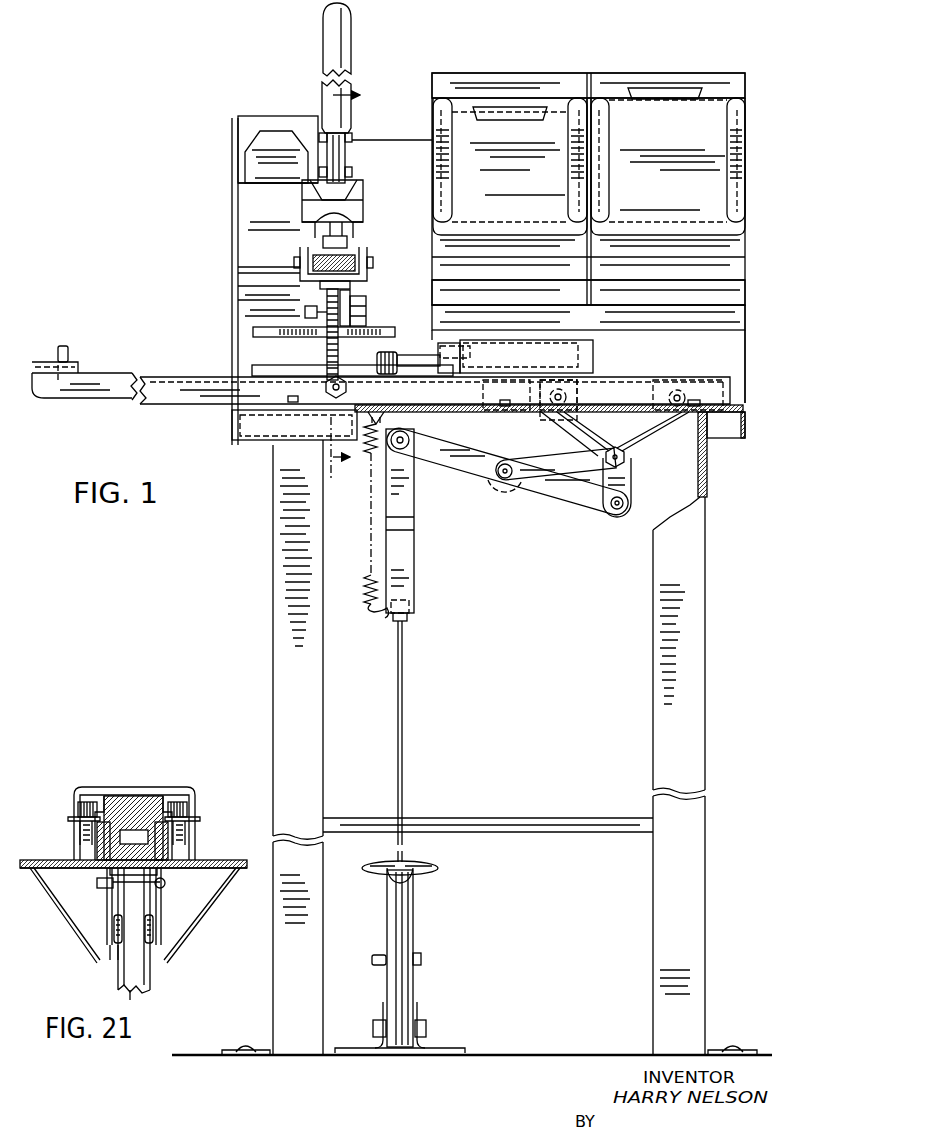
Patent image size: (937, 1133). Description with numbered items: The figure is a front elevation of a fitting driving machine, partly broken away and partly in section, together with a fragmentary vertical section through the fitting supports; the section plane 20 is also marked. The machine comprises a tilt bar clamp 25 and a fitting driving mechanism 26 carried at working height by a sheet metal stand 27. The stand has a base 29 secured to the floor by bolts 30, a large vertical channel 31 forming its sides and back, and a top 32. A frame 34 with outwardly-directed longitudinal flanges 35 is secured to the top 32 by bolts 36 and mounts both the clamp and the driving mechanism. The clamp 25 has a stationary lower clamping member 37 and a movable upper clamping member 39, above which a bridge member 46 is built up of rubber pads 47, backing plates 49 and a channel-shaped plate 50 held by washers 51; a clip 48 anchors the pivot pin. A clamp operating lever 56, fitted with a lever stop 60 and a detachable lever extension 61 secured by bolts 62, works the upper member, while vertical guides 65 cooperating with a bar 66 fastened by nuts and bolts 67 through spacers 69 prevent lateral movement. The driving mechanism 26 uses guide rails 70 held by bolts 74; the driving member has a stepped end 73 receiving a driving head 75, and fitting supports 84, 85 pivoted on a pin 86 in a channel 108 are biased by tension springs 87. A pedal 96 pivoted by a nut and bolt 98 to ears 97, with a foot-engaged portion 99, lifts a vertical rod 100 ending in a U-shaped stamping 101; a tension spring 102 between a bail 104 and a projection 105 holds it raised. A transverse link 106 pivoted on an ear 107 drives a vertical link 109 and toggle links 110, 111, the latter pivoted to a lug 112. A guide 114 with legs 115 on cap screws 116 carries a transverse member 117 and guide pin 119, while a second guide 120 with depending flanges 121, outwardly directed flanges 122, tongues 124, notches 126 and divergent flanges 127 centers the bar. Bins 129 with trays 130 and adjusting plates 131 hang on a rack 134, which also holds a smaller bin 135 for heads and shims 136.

In FIG. 1, the section line 20- 20 is at (368, 290).
In FIG. 1, the tilt bar clamp 25 is at (375, 212).
In FIG. 1, the fitting driving mechanism 26 is at (574, 340).
In FIG. 1, the stand 27 is at (712, 714).
In FIG. 1, the base 29 is at (262, 1056).
In FIG. 1, the bolts 30 is at (252, 1048).
In FIG. 1, the vertical channel 31 is at (273, 745).
In FIG. 1, the top 32 is at (255, 440).
In FIG. 1, the frame 34 is at (598, 378).
In FIG. 21, the frame 34 is at (133, 874).
In FIG. 1, the longitudinal flanges 35 is at (452, 412).
In FIG. 1, the bolts 36 is at (292, 402).
In FIG. 1, the lower clamping member 37 is at (290, 372).
In FIG. 1, the upper clamping member 39 is at (280, 338).
In FIG. 1, the bridge member 46 is at (268, 247).
In FIG. 1, the rubber pads 47 is at (356, 262).
In FIG. 1, the clip 48 is at (300, 272).
In FIG. 1, the backing plates 49 is at (348, 243).
In FIG. 1, the channel-shaped plate 50 is at (326, 298).
In FIG. 1, the washers 51 is at (350, 287).
In FIG. 1, the clamp operating lever 56 is at (365, 230).
In FIG. 1, the lever stop 60 is at (302, 205).
In FIG. 1, the lever extension 61 is at (350, 50).
In FIG. 1, the bolts 62 is at (350, 140).
In FIG. 1, the vertical guides 65 is at (435, 345).
In FIG. 1, the bar 66 is at (366, 322).
In FIG. 1, the nuts and bolts 67 is at (305, 311).
In FIG. 1, the spacers 69 is at (366, 310).
In FIG. 1, the guide rails 70 is at (443, 357).
In FIG. 21, the guide rails 70 is at (85, 872).
In FIG. 21, the stepped end 73 is at (105, 868).
In FIG. 21, the bolts 74 is at (78, 808).
In FIG. 21, the driving head 75 is at (135, 800).
In FIG. 21, the fitting support 84 is at (106, 904).
In FIG. 21, the fitting support 85 is at (162, 904).
In FIG. 21, the pin 86 is at (166, 885).
In FIG. 21, the tension springs 87 is at (145, 943).
In FIG. 1, the pedal 96 is at (412, 932).
In FIG. 1, the ears 97 is at (412, 1012).
In FIG. 1, the nut and bolt 98 is at (428, 1030).
In FIG. 1, the foot-engaged portion 99 is at (440, 868).
In FIG. 1, the vertical rod 100 is at (404, 730).
In FIG. 1, the U-shaped stamping 101 is at (415, 565).
In FIG. 1, the tension spring 102 is at (366, 578).
In FIG. 1, the bail 104 is at (384, 415).
In FIG. 1, the projection 105 is at (386, 616).
In FIG. 1, the transverse link 106 is at (556, 495).
In FIG. 1, the ear 107 is at (520, 456).
In FIG. 21, the ear 107 is at (208, 920).
In FIG. 21, the channel 108 is at (114, 930).
In FIG. 1, the vertical link 109 is at (632, 485).
In FIG. 1, the link 110 is at (640, 446).
In FIG. 1, the link 111 is at (582, 440).
In FIG. 21, the link 111 is at (130, 1000).
In FIG. 1, the lug 112 is at (546, 413).
In FIG. 21, the lug 112 is at (151, 917).
In FIG. 1, the guide 114 is at (118, 366).
In FIG. 1, the legs 115 is at (100, 398).
In FIG. 1, the cap screws 116 is at (346, 387).
In FIG. 1, the transverse member 117 is at (35, 360).
In FIG. 1, the guide pin 119 is at (68, 348).
In FIG. 1, the second guide 120 is at (522, 350).
In FIG. 21, the depending flanges 121 is at (73, 790).
In FIG. 21, the outwardly directed flanges 122 is at (55, 848).
In FIG. 21, the tongues 124 is at (68, 820).
In FIG. 1, the notches 126 is at (475, 348).
In FIG. 1, the divergent flanges 127 is at (392, 374).
In FIG. 1, the bins 129 is at (490, 73).
In FIG. 1, the tray 130 is at (720, 285).
In FIG. 1, the plate 131 is at (552, 105).
In FIG. 1, the rack 134 is at (745, 352).
In FIG. 1, the bin 135 is at (246, 118).
In FIG. 1, the shims 136 is at (275, 130).